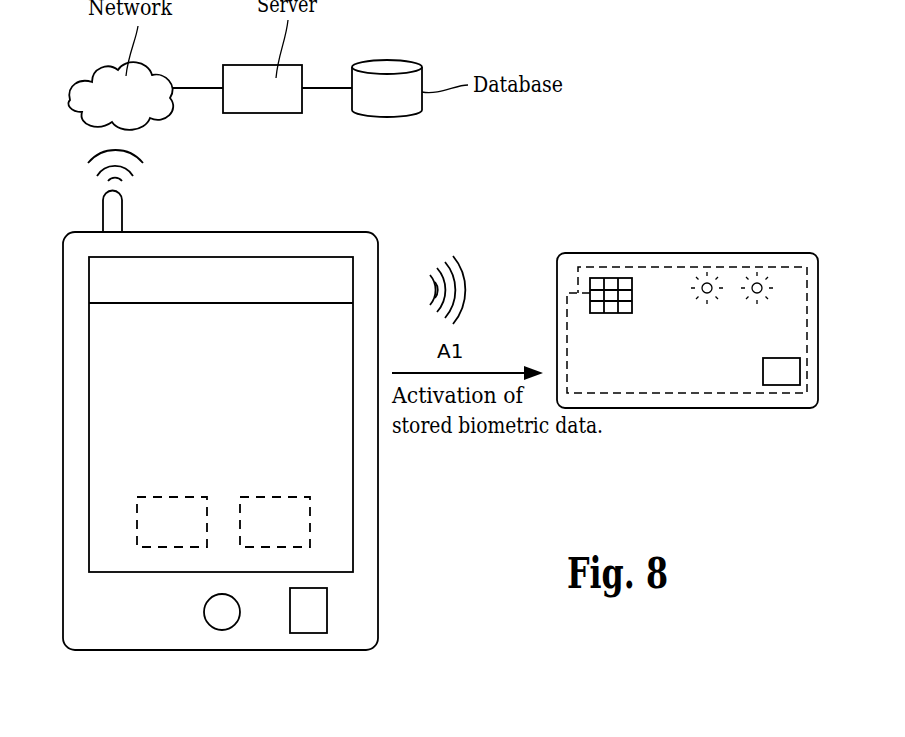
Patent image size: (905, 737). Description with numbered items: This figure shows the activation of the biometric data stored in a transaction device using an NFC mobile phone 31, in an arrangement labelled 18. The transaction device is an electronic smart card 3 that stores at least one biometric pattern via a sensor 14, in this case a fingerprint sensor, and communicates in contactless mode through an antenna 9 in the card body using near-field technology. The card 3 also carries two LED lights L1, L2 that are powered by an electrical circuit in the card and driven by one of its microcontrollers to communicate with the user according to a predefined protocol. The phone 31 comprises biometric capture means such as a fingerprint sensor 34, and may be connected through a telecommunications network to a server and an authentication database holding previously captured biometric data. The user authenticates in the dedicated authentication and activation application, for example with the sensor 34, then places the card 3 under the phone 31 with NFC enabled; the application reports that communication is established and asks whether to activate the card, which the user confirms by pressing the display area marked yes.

The biometric card system 18 is at (752, 167).
The electronic smart card 3 is at (830, 284).
The antenna 9 is at (666, 266).
The LED light L1 is at (705, 282).
The LED light L2 is at (762, 284).
The sensor 14 is at (793, 372).
The NFC mobile phone 31 is at (221, 420).
The fingerprint sensor 34 is at (318, 612).